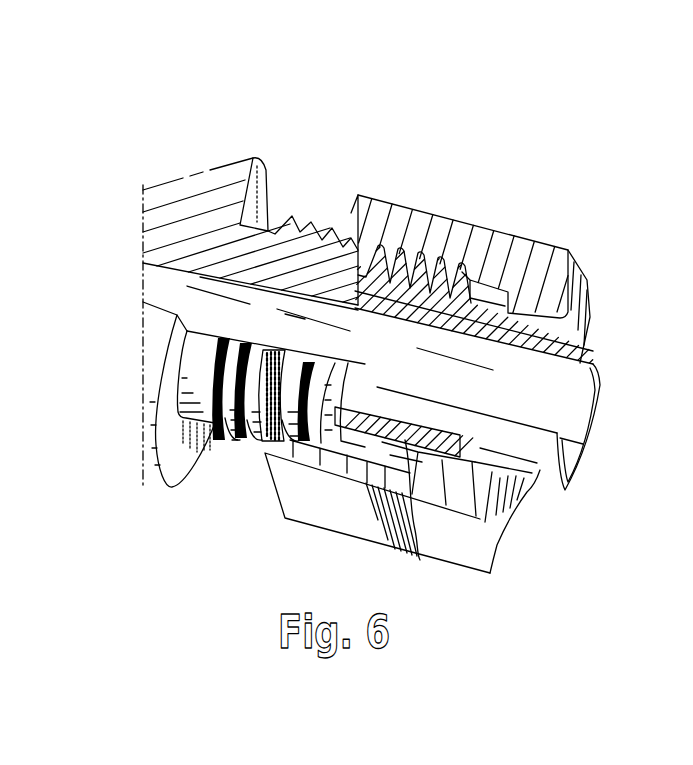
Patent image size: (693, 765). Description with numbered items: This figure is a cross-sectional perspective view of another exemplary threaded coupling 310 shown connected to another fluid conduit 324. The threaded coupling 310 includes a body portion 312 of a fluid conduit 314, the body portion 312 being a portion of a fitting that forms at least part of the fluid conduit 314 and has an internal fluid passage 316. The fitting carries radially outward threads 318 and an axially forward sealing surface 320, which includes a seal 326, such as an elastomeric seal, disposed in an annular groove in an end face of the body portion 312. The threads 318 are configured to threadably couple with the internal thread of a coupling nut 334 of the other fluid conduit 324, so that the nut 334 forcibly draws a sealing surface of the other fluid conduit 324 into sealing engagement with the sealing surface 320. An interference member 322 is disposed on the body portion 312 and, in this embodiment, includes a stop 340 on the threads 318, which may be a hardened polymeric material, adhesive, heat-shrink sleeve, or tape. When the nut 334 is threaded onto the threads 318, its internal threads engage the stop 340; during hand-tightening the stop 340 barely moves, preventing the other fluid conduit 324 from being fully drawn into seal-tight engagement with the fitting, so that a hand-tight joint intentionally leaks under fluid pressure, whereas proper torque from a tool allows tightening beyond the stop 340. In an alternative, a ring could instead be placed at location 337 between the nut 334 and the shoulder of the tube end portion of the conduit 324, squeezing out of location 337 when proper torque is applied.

The threaded coupling 310 is at (149, 161).
The body portion 312 is at (181, 233).
The fluid conduit 314 is at (210, 191).
The internal fluid passage 316 is at (176, 296).
The threads 318 is at (243, 452).
The axially forward sealing surface 320 is at (412, 262).
The interference member 322 is at (317, 207).
The other fluid conduit 324 is at (594, 282).
The seal 326 is at (366, 380).
The coupling nut 334 is at (325, 508).
The location 337 is at (415, 550).
The stop 340 is at (270, 448).